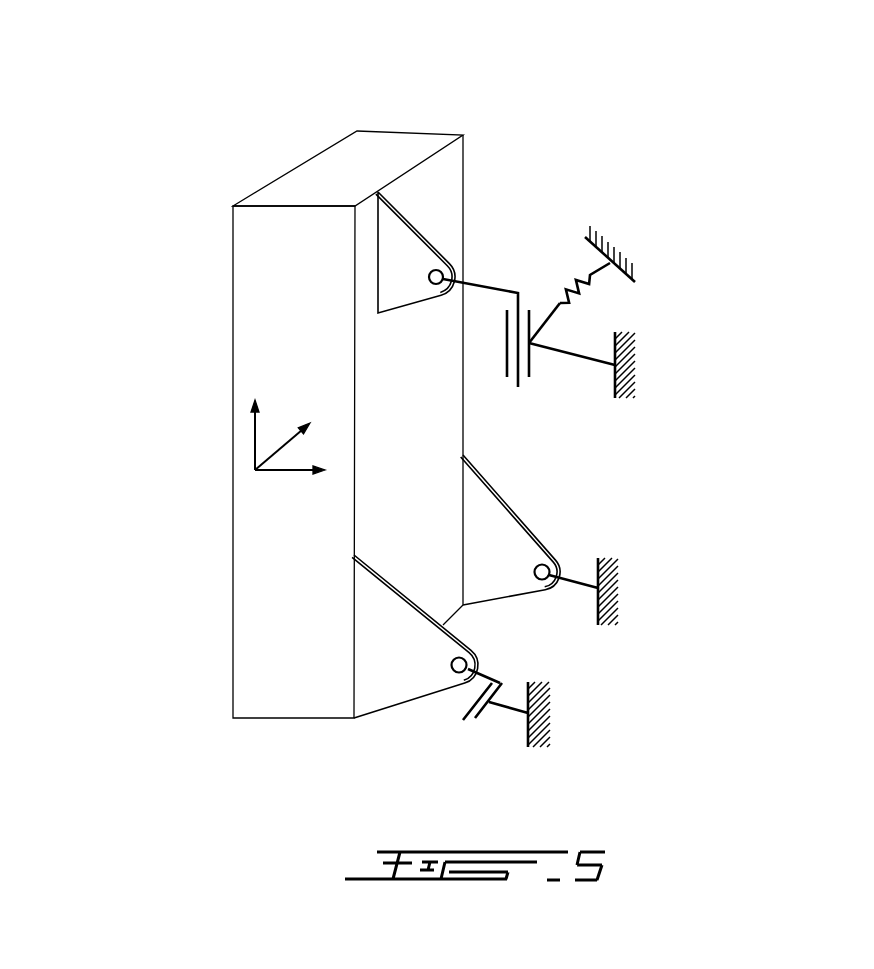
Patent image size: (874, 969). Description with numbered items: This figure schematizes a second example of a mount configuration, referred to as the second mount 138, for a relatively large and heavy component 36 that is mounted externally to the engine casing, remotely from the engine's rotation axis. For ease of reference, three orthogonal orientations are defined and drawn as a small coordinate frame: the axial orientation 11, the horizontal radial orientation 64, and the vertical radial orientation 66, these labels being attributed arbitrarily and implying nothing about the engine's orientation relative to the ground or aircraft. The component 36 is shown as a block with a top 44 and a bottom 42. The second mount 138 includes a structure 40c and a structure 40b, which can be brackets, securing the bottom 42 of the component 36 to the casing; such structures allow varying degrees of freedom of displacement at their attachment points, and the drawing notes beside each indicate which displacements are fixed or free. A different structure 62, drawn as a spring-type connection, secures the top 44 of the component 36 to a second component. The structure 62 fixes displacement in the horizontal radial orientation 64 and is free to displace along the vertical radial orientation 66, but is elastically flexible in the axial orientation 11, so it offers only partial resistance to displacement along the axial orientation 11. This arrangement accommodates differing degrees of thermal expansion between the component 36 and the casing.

The component 36 is at (206, 142).
The top of the component 44 is at (275, 245).
The bottom of the component 42 is at (276, 678).
The axial orientation 11 is at (282, 437).
The vertical radial orientation 66 is at (255, 440).
The horizontal radial orientation 64 is at (278, 475).
The second mount 138 is at (705, 172).
The structure 62 is at (567, 353).
The structure 40b is at (490, 528).
The structure 40c is at (415, 678).